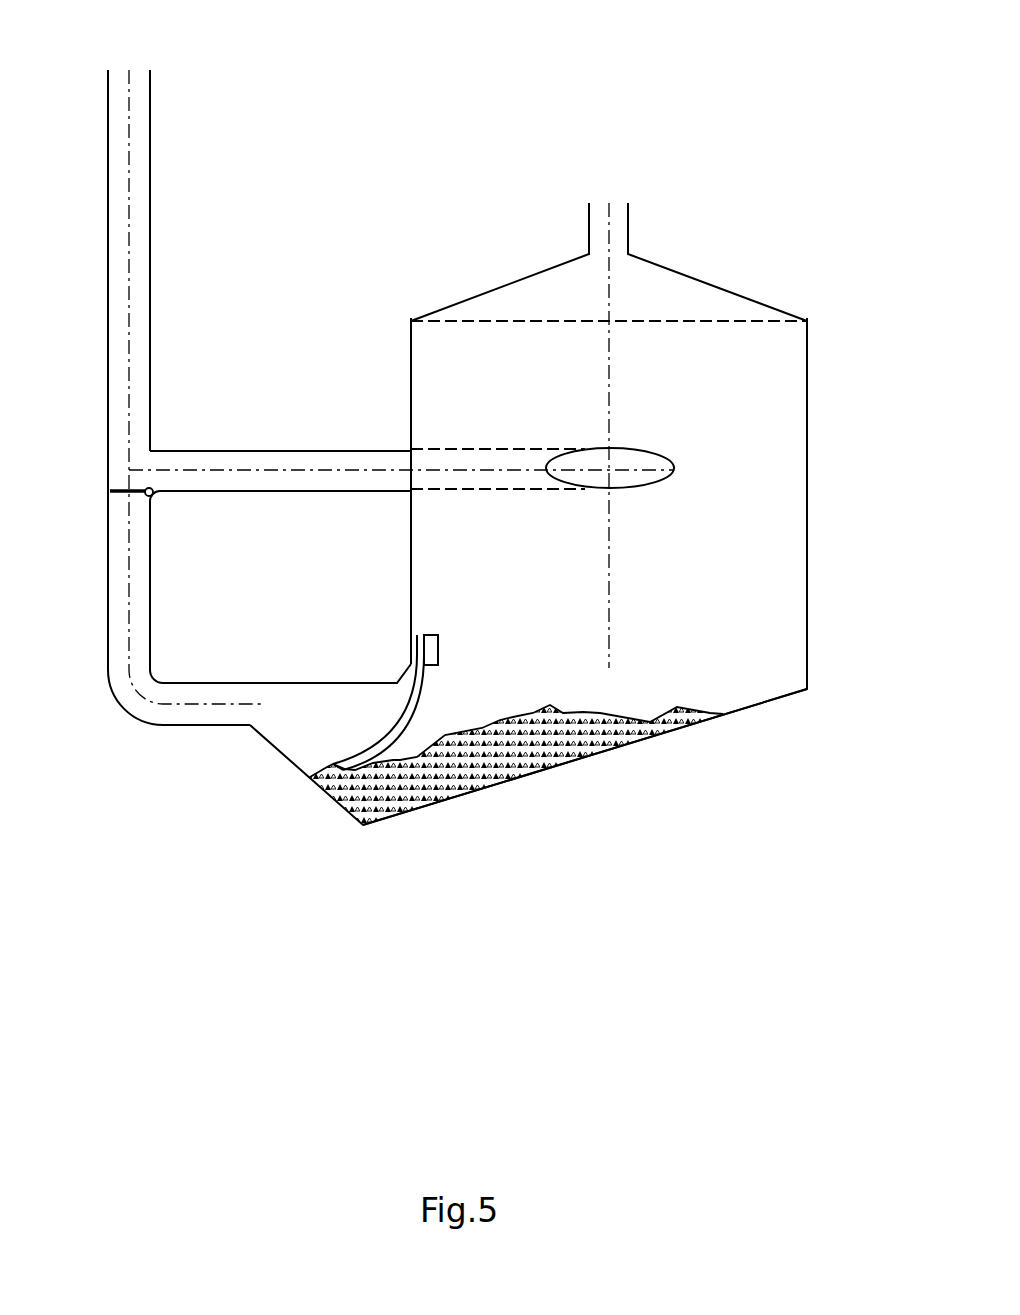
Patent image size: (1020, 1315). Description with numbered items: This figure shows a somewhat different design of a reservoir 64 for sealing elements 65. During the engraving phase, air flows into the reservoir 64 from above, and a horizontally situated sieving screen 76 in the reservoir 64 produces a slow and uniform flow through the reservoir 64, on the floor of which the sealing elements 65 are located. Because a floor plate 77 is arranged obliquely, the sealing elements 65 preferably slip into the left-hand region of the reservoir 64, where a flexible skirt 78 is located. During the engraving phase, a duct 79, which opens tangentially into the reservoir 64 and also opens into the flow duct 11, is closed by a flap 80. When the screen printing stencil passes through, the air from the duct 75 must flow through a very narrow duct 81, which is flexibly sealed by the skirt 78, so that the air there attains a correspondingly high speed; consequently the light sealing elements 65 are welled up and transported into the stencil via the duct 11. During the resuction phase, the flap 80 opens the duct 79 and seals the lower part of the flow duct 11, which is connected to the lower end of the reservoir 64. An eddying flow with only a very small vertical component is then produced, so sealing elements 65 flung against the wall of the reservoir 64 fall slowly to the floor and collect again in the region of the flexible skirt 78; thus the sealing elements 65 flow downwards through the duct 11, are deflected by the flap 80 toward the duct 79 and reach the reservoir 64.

The duct 11 is at (150, 93).
The reservoir 64 is at (810, 528).
The sealing elements 65 is at (520, 760).
The duct 75 is at (602, 218).
The sieving screen 76 is at (680, 318).
The floor plate 77 is at (767, 702).
The flexible skirt 78 is at (400, 730).
The duct 79 is at (257, 472).
The flap 80 is at (110, 490).
The narrow duct 81 is at (337, 763).